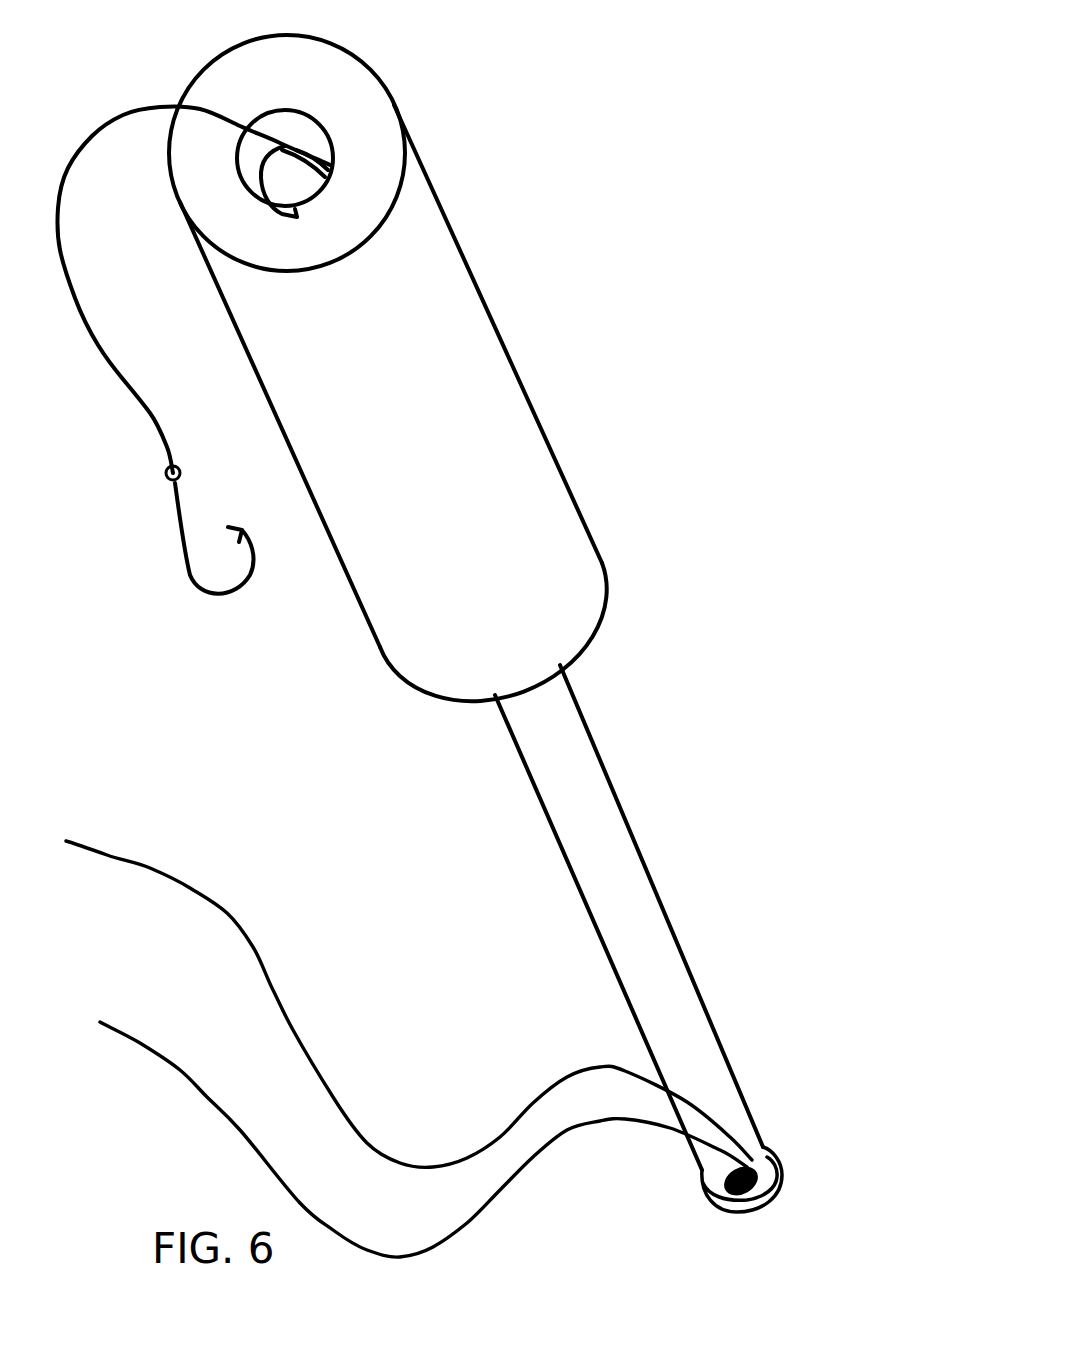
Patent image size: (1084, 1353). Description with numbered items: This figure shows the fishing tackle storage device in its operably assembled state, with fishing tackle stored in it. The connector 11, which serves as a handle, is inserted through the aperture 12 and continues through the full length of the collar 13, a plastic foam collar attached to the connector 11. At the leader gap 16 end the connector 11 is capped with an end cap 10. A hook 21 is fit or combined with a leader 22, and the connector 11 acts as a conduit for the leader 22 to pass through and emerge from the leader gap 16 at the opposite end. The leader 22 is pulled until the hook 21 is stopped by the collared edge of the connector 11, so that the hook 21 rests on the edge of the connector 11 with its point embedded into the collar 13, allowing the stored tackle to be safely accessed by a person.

The end cap 10 is at (823, 1179).
The connector 11 is at (630, 922).
The aperture 12 is at (431, 147).
The collar 13 is at (438, 453).
The leader gap 16 is at (831, 1145).
The hook 21 is at (278, 213).
The leader 22 is at (273, 989).